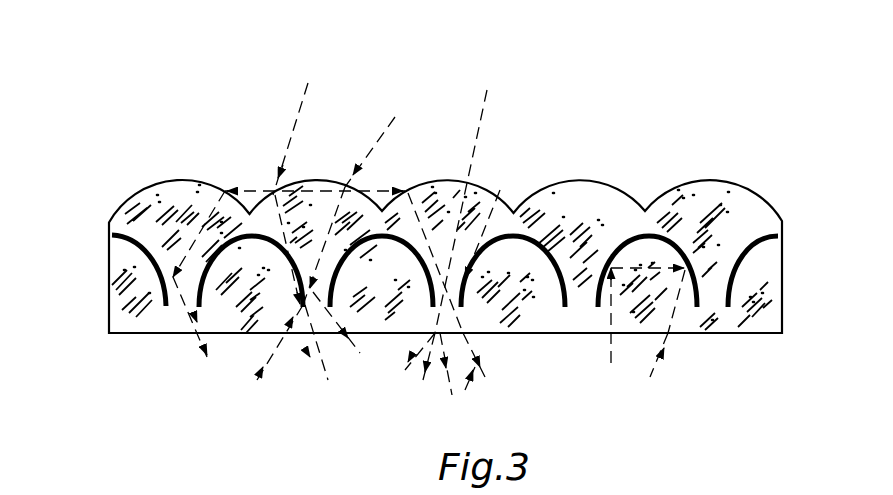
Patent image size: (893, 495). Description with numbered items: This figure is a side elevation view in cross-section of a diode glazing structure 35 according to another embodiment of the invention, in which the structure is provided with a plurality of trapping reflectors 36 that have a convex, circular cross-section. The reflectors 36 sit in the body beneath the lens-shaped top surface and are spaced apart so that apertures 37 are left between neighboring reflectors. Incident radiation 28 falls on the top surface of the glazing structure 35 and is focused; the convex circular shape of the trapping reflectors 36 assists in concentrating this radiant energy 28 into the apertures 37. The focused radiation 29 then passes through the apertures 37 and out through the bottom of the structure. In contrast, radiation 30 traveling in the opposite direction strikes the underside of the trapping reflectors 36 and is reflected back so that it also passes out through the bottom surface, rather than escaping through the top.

The incident radiation 28 is at (311, 91).
The focused radiation 29 is at (198, 352).
The radiation in the opposite direction 30 is at (612, 348).
The diode glazing structure 35 is at (657, 105).
The convex circular cross-section trapping reflectors 36 is at (133, 243).
The apertures 37 is at (715, 296).